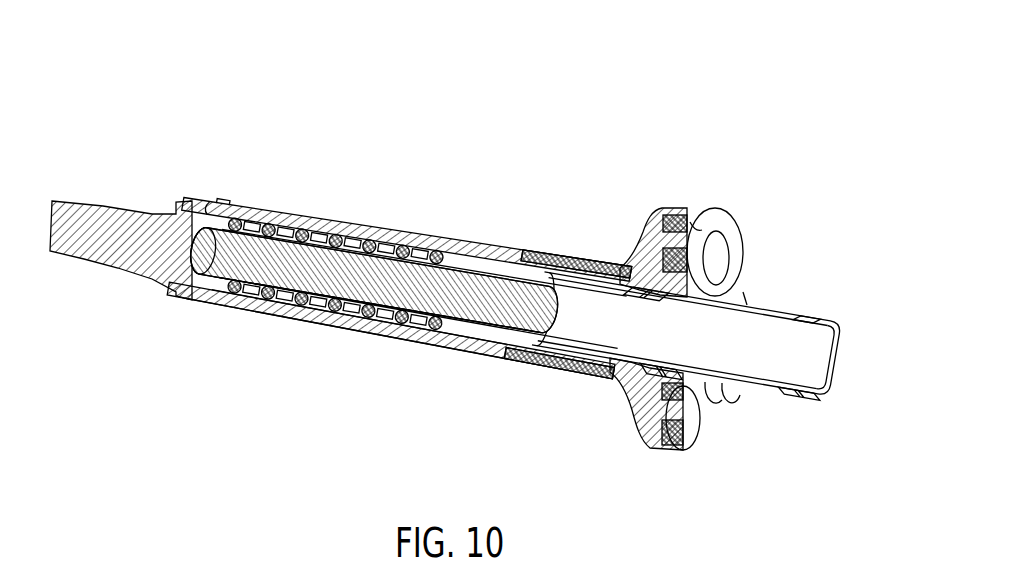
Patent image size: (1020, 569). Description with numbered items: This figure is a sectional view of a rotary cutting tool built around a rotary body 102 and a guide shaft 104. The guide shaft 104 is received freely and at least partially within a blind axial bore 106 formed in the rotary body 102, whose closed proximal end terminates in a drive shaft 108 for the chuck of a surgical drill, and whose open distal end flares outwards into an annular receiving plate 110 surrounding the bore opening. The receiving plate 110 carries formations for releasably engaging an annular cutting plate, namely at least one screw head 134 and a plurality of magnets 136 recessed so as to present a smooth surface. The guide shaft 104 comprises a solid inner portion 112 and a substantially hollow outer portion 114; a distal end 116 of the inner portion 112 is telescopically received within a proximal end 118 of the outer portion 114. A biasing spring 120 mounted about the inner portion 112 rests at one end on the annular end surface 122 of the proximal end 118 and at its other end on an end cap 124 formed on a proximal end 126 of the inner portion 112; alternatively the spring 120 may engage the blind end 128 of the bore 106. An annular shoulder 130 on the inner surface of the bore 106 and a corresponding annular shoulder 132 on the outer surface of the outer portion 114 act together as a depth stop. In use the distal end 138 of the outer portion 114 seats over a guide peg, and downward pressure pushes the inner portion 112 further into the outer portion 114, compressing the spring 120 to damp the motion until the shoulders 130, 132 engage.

The rotary body 102 is at (399, 238).
The guide shaft 104 is at (687, 312).
The blind axial bore 106 is at (374, 241).
The drive shaft 108 is at (121, 227).
The annular receiving plate 110 is at (678, 287).
The inner portion 112 is at (396, 227).
The outer portion 114 is at (691, 376).
The distal end 116 is at (424, 245).
The proximal end 118 is at (380, 355).
The biasing spring 120 is at (359, 342).
The annular end surface 122 is at (344, 360).
The end cap 124 is at (222, 164).
The proximal end 126 is at (220, 310).
The blind end 128 is at (166, 154).
The annular shoulder 130 is at (416, 263).
The annular shoulder 132 is at (568, 274).
The screw head 134 is at (727, 434).
The magnets 136 is at (738, 222).
The distal end 138 is at (844, 334).